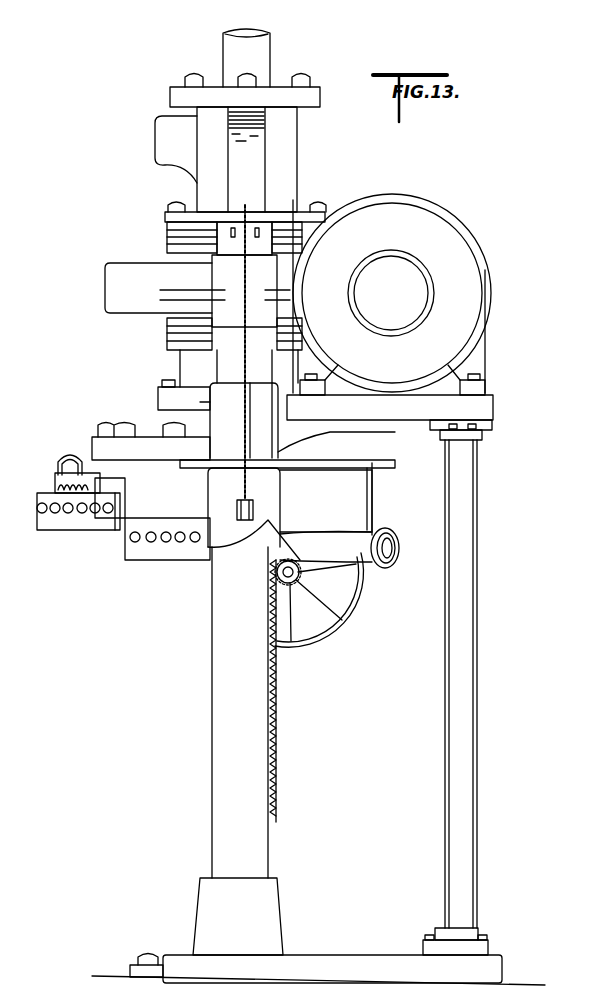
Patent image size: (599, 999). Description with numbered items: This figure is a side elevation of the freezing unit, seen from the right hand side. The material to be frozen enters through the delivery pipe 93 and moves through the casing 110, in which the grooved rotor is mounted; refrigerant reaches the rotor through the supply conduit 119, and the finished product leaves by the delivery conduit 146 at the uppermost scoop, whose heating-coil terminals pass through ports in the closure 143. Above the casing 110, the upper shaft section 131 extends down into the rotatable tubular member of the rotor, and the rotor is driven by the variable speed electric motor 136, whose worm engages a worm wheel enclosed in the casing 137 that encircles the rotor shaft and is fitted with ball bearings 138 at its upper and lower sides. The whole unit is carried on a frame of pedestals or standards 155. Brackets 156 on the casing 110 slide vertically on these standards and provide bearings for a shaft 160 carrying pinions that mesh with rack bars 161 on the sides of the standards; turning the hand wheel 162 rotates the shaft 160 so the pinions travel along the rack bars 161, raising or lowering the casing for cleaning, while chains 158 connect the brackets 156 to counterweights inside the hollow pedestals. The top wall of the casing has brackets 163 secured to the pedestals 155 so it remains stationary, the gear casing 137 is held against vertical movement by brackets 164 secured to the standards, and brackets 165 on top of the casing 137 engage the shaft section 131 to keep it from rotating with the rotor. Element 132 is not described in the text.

The delivery pipe 93 is at (399, 557).
The casing 110 is at (358, 498).
The supply conduit 119 is at (272, 44).
The upper shaft section 131 is at (297, 170).
The bracket 132 is at (157, 143).
The variable speed electric motor 136 is at (491, 264).
The casing 137 is at (105, 296).
The ball bearings 138 is at (167, 240).
The closure 143 is at (58, 476).
The delivery conduit 146 is at (64, 456).
The pedestals or standards 155 is at (212, 684).
The brackets 156 is at (271, 503).
The chains 158 is at (245, 438).
The shaft 160 is at (277, 577).
The rack bars 161 is at (281, 688).
The hand wheel 162 is at (344, 623).
The brackets 163 is at (212, 453).
The brackets 164 is at (214, 272).
The brackets 165 is at (260, 143).